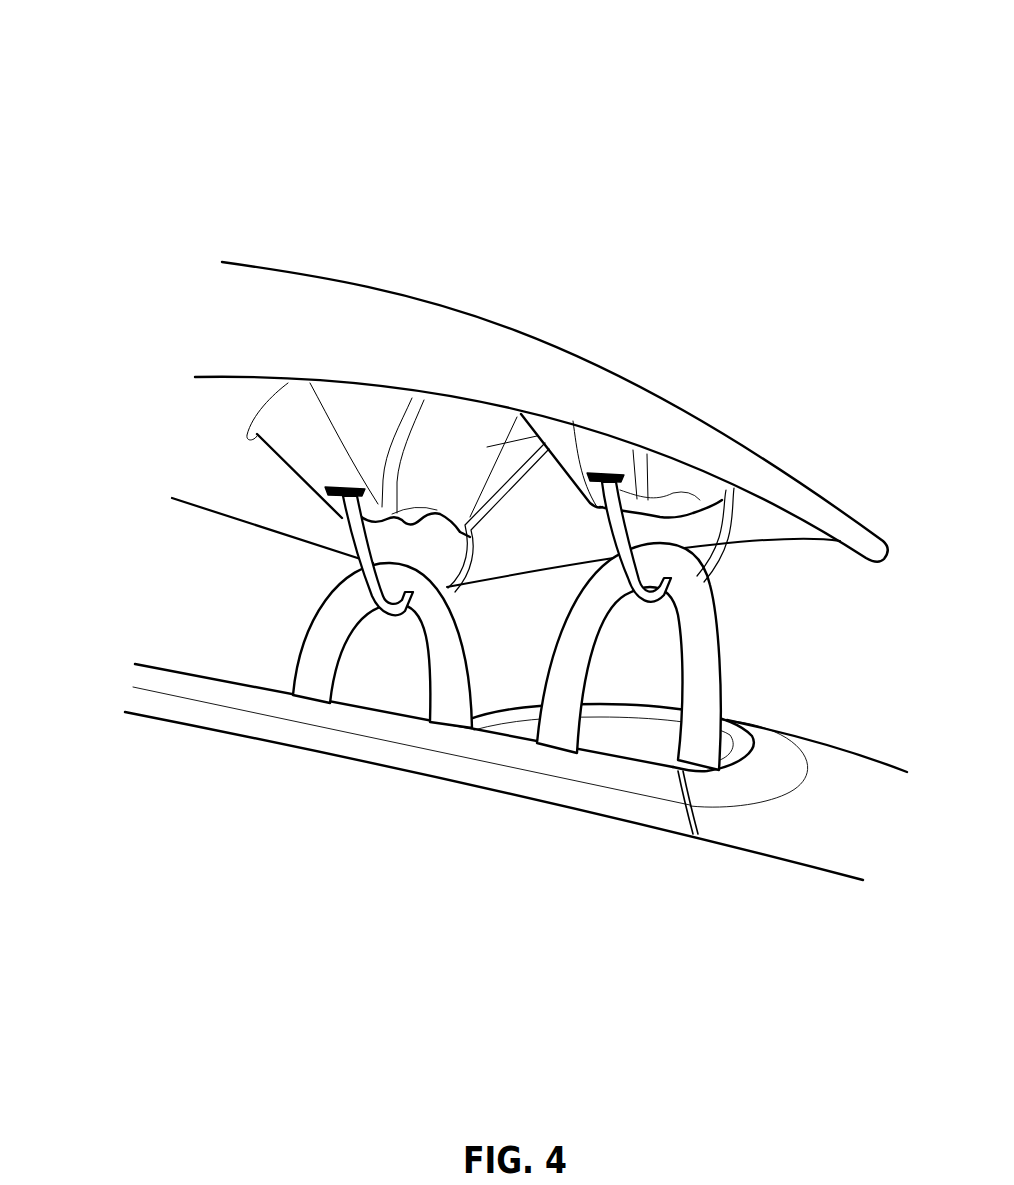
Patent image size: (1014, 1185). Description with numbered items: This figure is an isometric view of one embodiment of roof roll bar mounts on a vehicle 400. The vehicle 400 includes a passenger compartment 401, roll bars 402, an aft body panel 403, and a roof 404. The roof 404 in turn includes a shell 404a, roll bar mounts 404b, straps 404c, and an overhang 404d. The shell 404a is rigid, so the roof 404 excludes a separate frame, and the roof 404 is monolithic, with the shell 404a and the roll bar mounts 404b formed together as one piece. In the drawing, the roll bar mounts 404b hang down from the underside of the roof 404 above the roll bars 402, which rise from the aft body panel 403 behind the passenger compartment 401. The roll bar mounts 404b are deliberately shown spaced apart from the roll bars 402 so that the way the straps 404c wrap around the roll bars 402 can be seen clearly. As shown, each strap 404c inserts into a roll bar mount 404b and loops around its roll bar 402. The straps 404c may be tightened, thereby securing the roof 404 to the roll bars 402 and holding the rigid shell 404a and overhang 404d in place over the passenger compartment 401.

The vehicle 400 is at (190, 92).
The passenger compartment 401 is at (185, 578).
The roll bars 402 is at (560, 626).
The aft body panel 403 is at (830, 747).
The roof 404 is at (127, 338).
The shell 404a is at (600, 332).
The roll bar mounts 404b is at (400, 449).
The straps 404c is at (718, 563).
The overhang 404d is at (813, 544).